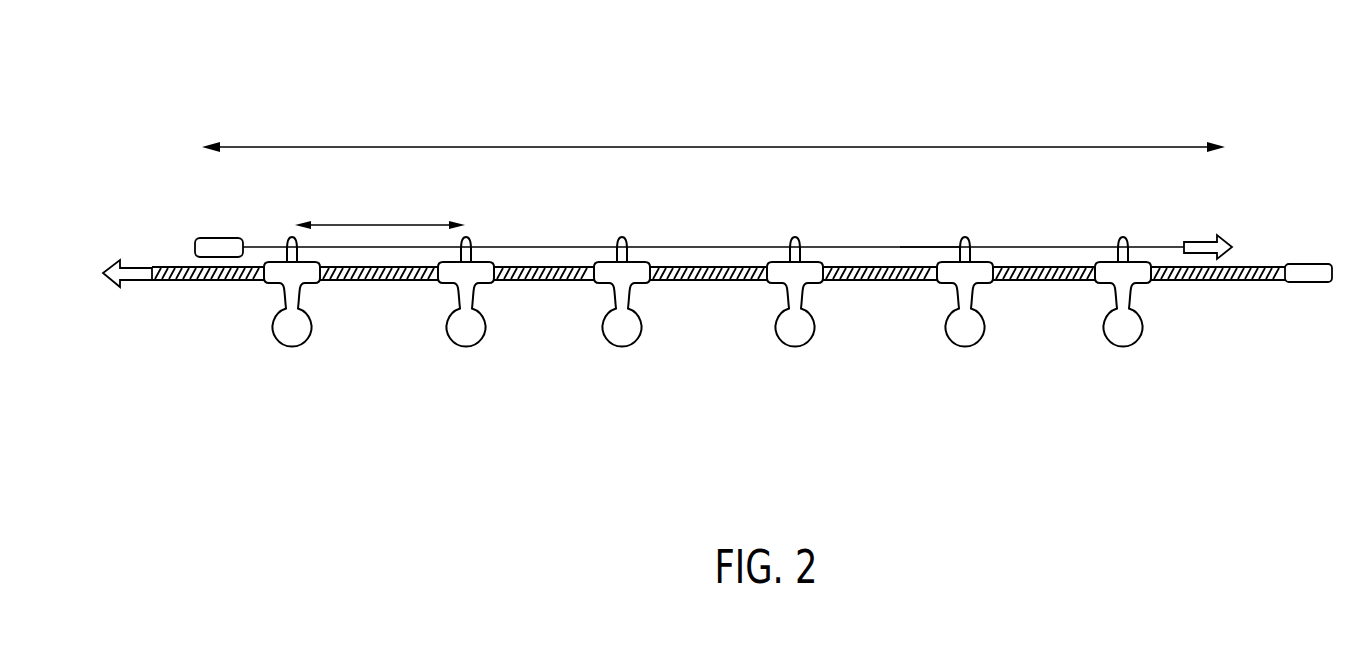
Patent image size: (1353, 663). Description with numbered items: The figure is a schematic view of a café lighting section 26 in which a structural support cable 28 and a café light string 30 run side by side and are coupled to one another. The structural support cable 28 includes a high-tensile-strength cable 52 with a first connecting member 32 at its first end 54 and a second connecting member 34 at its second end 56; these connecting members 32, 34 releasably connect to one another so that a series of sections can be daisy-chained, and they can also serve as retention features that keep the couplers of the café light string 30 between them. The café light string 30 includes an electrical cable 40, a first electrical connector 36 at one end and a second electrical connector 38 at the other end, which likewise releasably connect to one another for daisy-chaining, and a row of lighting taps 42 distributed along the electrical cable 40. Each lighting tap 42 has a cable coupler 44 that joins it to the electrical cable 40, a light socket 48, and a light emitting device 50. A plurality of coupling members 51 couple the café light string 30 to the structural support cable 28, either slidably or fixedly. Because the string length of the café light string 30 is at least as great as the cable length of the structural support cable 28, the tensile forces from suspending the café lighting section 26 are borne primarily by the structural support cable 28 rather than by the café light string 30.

The café lighting section 26 is at (1110, 136).
The structural support cable 28 is at (842, 234).
The café light string 30 is at (895, 283).
The first connecting member 32 is at (218, 237).
The second connecting member 34 is at (1199, 240).
The first electrical connector 36 is at (137, 284).
The second electrical connector 38 is at (1318, 284).
The electrical cable 40 is at (1051, 283).
The lighting taps 42 is at (707, 345).
The cable coupler 44 is at (631, 262).
The light socket 48 is at (777, 303).
The light emitting device 50 is at (621, 349).
The coupling members 51 is at (469, 240).
The high-tensile-strength cable 52 is at (928, 247).
The first end 54 is at (182, 224).
The second end 56 is at (1242, 243).